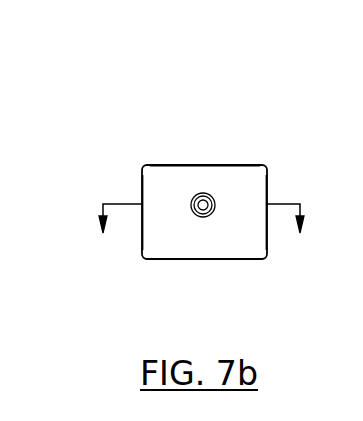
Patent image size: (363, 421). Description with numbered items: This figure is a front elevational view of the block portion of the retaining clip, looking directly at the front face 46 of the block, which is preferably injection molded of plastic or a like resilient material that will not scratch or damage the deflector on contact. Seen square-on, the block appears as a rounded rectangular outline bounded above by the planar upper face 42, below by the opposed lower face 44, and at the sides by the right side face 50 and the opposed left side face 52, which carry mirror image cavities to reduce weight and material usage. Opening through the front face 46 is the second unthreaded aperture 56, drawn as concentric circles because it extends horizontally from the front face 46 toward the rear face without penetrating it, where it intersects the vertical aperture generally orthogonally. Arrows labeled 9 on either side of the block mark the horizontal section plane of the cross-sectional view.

The section line 9- 9 is at (202, 220).
The upper face 42 is at (190, 164).
The lower face 44 is at (170, 260).
The front face 46 is at (158, 229).
The right side face 50 is at (141, 182).
The left side face 52 is at (269, 175).
The second unthreaded aperture 56 is at (213, 199).